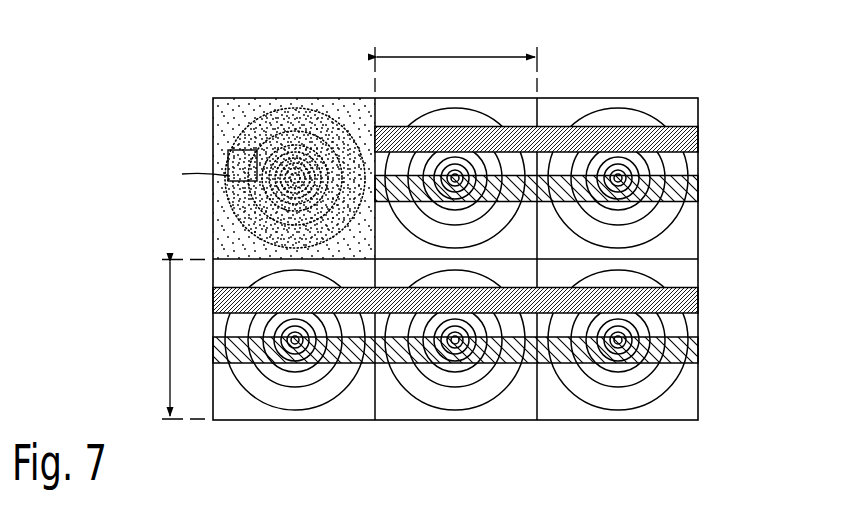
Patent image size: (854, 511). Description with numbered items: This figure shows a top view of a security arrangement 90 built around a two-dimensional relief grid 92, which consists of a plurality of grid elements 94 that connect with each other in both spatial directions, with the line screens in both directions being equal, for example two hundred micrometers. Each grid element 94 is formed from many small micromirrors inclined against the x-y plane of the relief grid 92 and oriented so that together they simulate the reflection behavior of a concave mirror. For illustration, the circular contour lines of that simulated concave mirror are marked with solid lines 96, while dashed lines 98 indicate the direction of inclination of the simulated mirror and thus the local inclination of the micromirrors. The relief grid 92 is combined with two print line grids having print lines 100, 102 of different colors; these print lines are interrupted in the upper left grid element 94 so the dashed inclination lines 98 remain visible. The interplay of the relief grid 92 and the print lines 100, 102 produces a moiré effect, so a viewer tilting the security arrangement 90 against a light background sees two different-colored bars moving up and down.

The security arrangement 90 is at (405, 220).
The two-dimensional relief grid 92 is at (672, 97).
The grid element 94 is at (561, 107).
The solid lines 96 is at (236, 210).
The dashed lines 98 is at (232, 118).
The print lines 100 is at (690, 136).
The print lines 102 is at (690, 184).